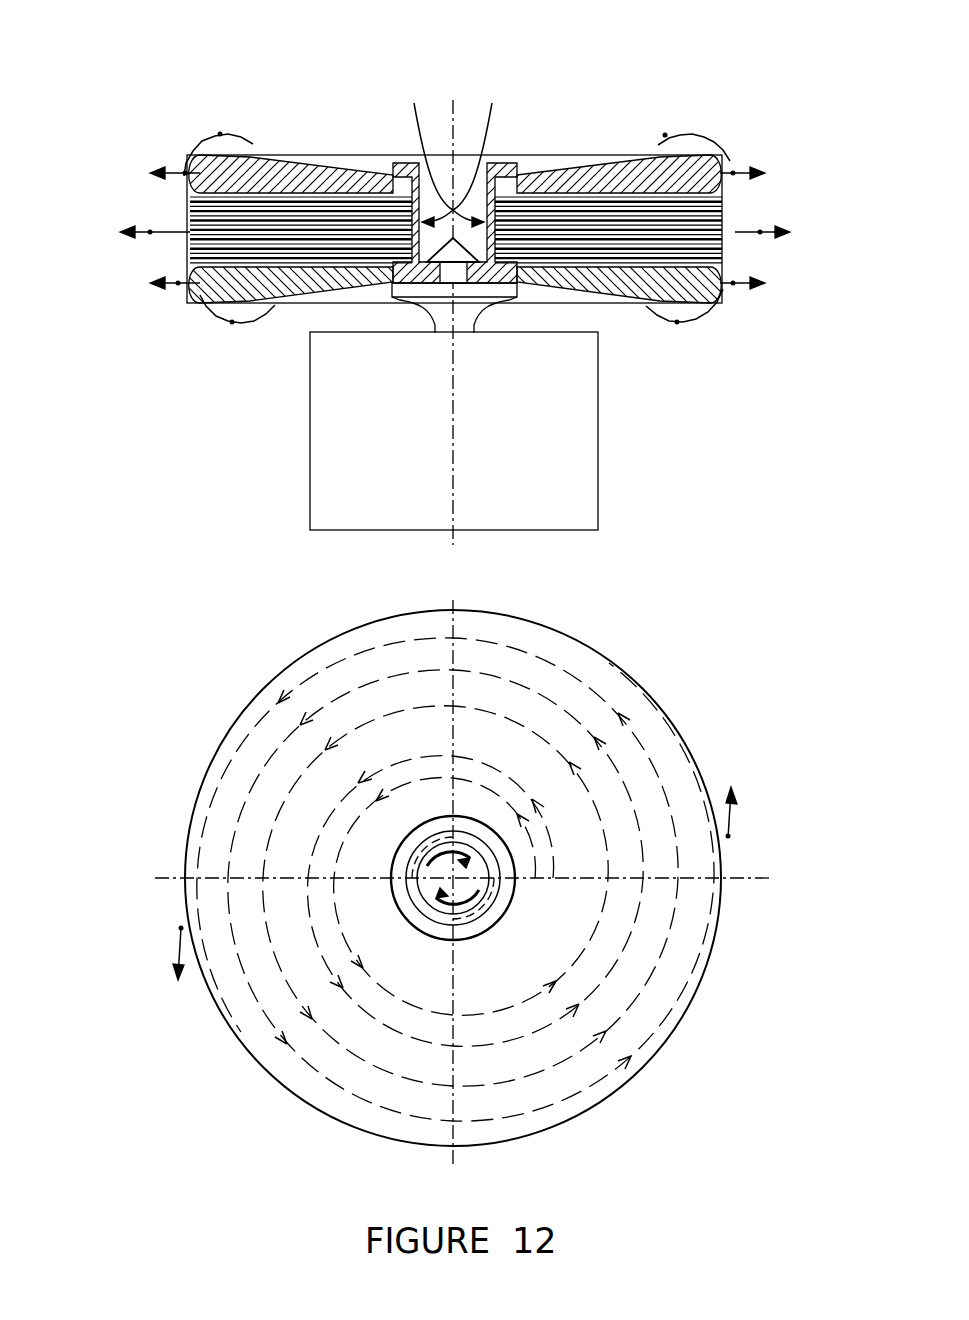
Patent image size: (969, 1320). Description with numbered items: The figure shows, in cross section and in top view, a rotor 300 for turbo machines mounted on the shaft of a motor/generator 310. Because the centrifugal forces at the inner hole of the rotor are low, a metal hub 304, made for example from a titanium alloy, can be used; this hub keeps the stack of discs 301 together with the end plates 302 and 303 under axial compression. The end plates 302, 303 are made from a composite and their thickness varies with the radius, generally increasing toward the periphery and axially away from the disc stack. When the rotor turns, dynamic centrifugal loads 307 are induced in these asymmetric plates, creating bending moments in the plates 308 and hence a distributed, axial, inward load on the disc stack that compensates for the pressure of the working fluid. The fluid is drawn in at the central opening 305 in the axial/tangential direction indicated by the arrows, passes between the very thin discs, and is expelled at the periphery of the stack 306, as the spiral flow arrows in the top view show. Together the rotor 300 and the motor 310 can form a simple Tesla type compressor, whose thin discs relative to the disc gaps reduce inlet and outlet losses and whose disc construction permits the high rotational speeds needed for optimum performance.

The rotor 300 is at (248, 90).
The stack of discs 301 is at (327, 223).
The end plate 302 is at (680, 165).
The end plate 303 is at (697, 290).
The metal hub 304 is at (516, 157).
The central opening 305 is at (419, 133).
The periphery of the stack 306 is at (150, 235).
The dynamic centrifugal loads 307 is at (185, 172).
The bending moments in the plates 308 is at (220, 134).
The motor/generator 310 is at (573, 438).